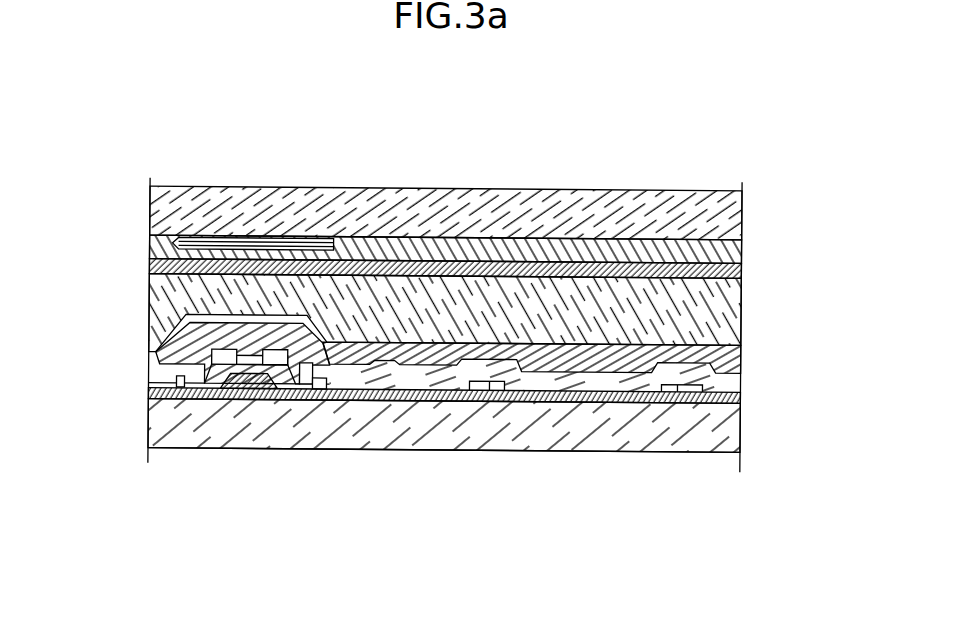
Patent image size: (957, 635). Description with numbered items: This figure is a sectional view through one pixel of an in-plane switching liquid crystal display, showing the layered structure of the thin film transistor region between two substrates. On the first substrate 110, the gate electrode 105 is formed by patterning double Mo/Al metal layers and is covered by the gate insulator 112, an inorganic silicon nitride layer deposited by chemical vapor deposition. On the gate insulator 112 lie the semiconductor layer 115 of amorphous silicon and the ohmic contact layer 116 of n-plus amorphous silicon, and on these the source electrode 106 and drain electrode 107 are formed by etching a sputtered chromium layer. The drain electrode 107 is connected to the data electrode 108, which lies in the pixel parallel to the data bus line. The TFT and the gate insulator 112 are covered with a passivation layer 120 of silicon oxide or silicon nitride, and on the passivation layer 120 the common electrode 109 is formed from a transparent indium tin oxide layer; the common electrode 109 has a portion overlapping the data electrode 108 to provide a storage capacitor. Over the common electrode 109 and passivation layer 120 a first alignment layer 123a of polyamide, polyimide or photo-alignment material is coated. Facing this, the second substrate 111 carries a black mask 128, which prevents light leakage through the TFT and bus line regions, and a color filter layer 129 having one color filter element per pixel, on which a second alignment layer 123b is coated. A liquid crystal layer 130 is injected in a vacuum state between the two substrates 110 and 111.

The second substrate 111 is at (677, 194).
The color filter layer 129 is at (743, 248).
The black mask 128 is at (249, 240).
The second alignment layer 123b is at (742, 272).
The first alignment layer 123a is at (742, 354).
The liquid crystal layer 130 is at (168, 320).
The data electrode 108 is at (488, 390).
The ohmic contact layer 116 is at (280, 386).
The drain electrode 107 is at (320, 367).
The gate electrode 105 is at (246, 391).
The common electrode 109 is at (371, 389).
The semiconductor layer 115 is at (190, 395).
The source electrode 106 is at (158, 383).
The passivation layer 120 is at (742, 388).
The gate insulator 112 is at (742, 411).
The first substrate 110 is at (675, 446).